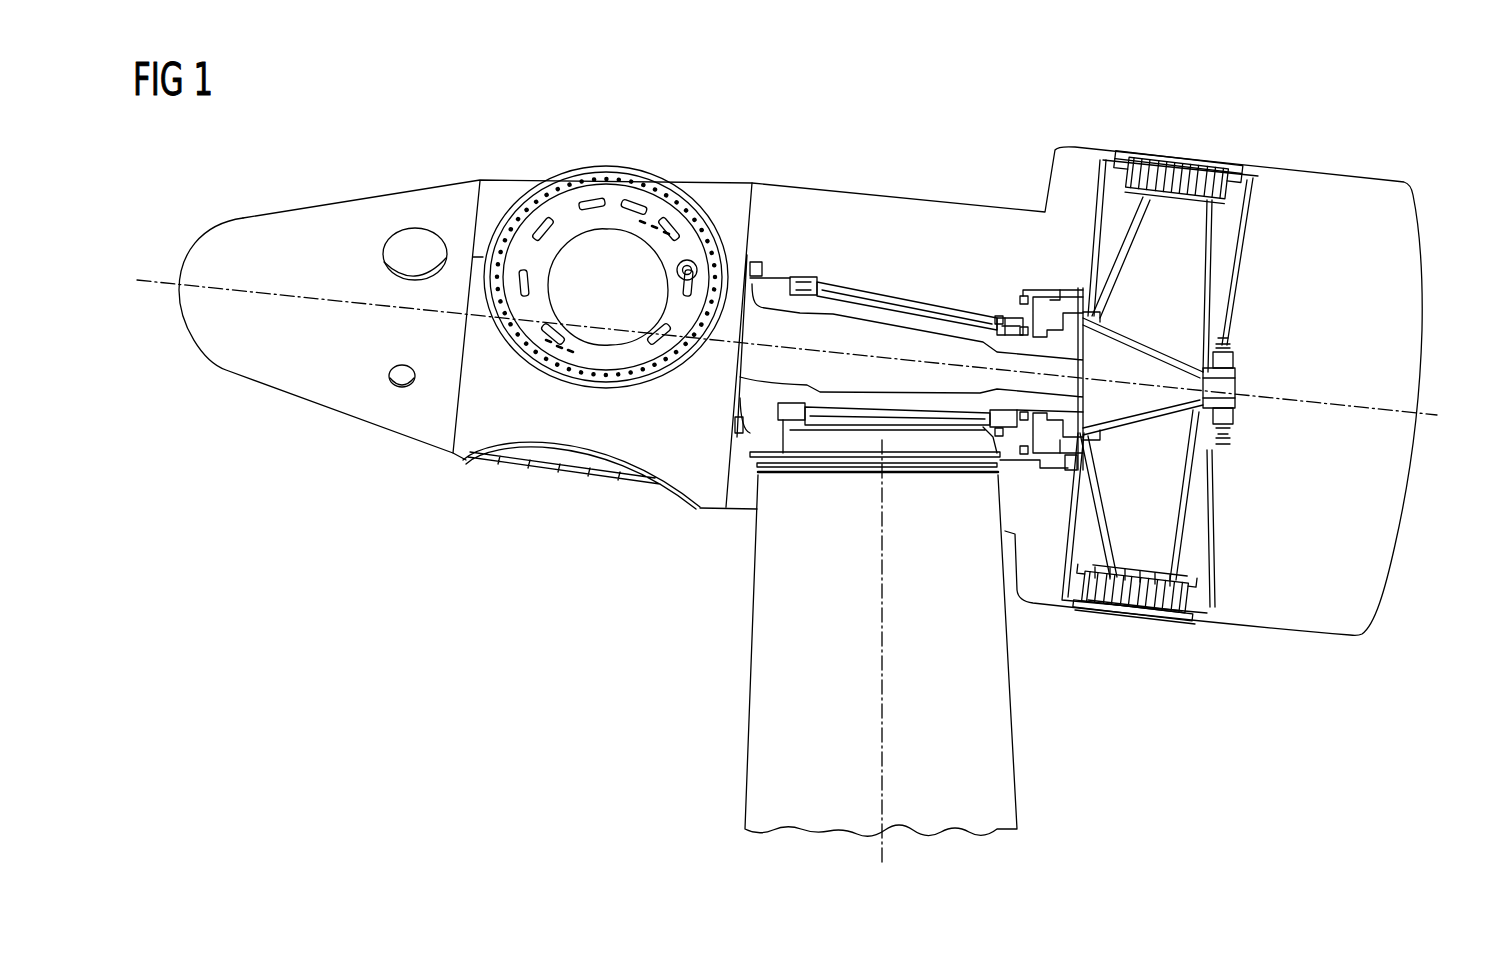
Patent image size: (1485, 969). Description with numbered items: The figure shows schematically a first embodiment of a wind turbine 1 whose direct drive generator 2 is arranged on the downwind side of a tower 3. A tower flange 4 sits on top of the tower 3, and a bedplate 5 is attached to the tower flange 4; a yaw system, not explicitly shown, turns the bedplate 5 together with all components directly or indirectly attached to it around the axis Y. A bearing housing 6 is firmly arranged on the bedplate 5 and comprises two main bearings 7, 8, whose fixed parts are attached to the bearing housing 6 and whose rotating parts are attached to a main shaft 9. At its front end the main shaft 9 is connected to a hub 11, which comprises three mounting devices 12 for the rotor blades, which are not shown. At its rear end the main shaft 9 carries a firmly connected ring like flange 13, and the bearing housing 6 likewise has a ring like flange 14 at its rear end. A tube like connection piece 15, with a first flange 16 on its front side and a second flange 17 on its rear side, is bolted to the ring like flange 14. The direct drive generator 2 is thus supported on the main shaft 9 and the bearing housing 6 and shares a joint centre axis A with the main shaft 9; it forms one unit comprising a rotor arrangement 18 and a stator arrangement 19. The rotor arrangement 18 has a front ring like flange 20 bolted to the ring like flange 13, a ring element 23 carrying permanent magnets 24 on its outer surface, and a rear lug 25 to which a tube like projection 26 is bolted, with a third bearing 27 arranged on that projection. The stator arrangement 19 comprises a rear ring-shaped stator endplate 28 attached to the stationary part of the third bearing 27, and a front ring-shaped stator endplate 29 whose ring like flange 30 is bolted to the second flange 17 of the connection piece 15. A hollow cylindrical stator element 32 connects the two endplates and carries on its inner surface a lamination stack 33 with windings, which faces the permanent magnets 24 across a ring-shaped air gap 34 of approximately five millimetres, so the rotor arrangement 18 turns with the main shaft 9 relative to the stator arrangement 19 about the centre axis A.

The wind turbine 1 is at (936, 104).
The direct drive generator 2 is at (1268, 140).
The tower 3 is at (1000, 767).
The tower flange 4 is at (950, 460).
The bedplate 5 is at (843, 460).
The bearing housing 6 is at (840, 282).
The main bearing 7 is at (800, 276).
The main bearing 8 is at (1012, 317).
The main shaft 9 is at (895, 318).
The hub 11 is at (500, 190).
The mounting device 12 is at (615, 200).
The ring like flange 13 is at (1083, 337).
The ring like flange 14 is at (990, 312).
The tube like connection piece 15 is at (1060, 298).
The first flange 16 is at (1035, 288).
The second flange 17 is at (1058, 465).
The rotor arrangement 18 is at (1167, 215).
The stator arrangement 19 is at (1168, 116).
The ring like flange 20 is at (1092, 322).
The ring element 23 is at (1118, 570).
The permanent magnets 24 is at (1162, 572).
The lug 25 is at (1200, 363).
The tube like projection 26 is at (1225, 420).
The third bearing 27 is at (1228, 365).
The rear ring-shaped stator endplate 28 is at (1250, 247).
The front ring-shaped stator endplate 29 is at (1100, 192).
The ring like flange 30 is at (1068, 462).
The hollow cylindrical stator element 32 is at (1110, 608).
The lamination stack 33 is at (1163, 597).
The air gap 34 is at (1240, 198).
The centre axis A is at (1352, 418).
The axis Y is at (882, 733).